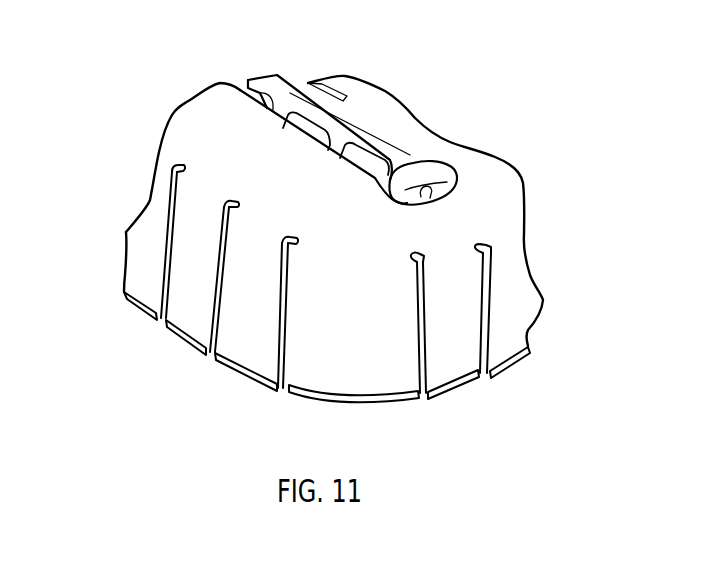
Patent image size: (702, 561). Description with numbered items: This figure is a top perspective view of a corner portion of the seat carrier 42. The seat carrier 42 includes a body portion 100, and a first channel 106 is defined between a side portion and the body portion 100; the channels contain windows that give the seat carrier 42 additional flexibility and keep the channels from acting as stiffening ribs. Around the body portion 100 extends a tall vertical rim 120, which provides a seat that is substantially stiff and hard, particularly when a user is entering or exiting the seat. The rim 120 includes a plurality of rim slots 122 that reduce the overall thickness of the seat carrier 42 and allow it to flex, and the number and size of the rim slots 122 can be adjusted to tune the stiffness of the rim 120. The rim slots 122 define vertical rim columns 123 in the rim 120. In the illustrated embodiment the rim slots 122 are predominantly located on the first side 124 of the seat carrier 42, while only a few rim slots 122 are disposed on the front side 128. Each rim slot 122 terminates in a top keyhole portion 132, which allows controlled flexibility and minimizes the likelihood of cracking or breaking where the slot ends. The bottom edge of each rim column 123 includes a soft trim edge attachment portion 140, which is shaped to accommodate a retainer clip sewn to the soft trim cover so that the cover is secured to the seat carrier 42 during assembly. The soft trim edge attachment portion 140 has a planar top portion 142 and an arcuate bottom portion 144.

The seat carrier 42 is at (487, 133).
The body portion 100 is at (390, 110).
The first channel 106 is at (195, 101).
The rim 120 is at (382, 350).
The rim slots 122 is at (153, 326).
The vertical rim columns 123 is at (153, 257).
The first side 124 is at (150, 211).
The front side 128 is at (515, 300).
The top keyhole portion 132 is at (187, 167).
The soft trim edge attachment portion 140 is at (175, 342).
The planar top portion 142 is at (230, 365).
The arcuate bottom portion 144 is at (283, 390).